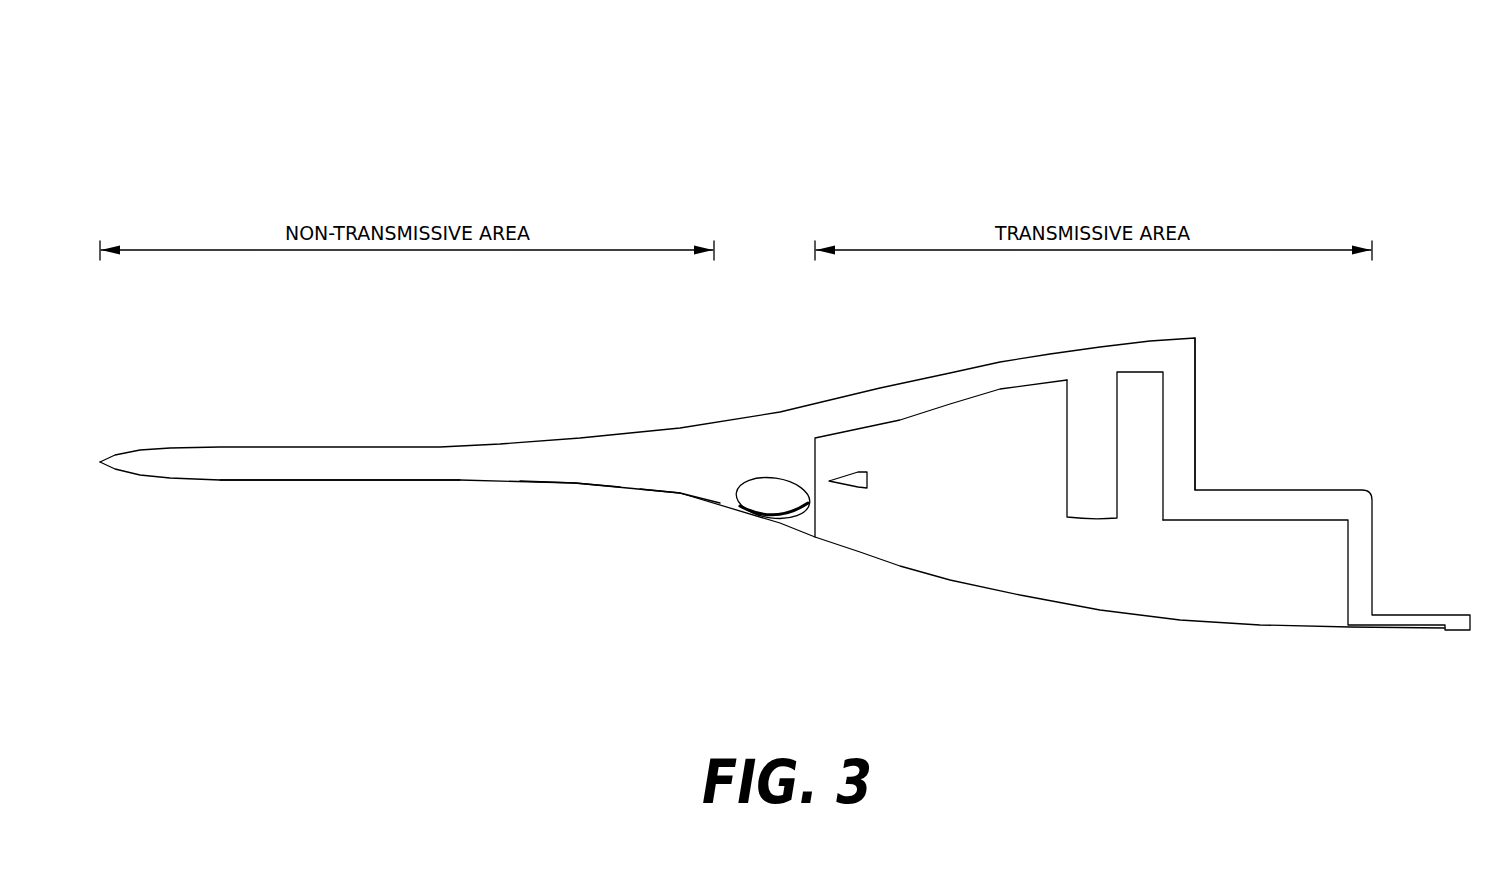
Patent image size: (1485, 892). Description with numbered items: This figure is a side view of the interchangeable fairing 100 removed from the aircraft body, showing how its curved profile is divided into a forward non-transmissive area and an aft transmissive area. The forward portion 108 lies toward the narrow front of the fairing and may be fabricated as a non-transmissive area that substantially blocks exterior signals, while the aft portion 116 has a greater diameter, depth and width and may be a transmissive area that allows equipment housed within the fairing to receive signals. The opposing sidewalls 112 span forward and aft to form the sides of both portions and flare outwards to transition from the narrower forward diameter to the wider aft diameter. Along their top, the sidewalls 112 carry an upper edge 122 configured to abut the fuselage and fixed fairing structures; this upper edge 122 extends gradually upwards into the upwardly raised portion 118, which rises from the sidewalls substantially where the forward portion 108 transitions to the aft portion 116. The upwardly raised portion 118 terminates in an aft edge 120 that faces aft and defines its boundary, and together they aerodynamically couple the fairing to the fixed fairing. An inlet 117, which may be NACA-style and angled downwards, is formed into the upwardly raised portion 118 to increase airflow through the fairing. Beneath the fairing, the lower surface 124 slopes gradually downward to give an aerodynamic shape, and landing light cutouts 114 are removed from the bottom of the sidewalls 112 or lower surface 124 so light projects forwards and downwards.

The interchangeable fairing 100 is at (255, 147).
The forward portion 108 is at (372, 598).
The sidewalls 112 is at (314, 465).
The landing light cutouts 114 is at (680, 493).
The aft portion 116 is at (1263, 352).
The inlet 117 is at (853, 489).
The upwardly raised portion 118 is at (1033, 400).
The aft edge 120 is at (1133, 410).
The upper edge 122 is at (438, 449).
The lower surface 124 is at (575, 483).